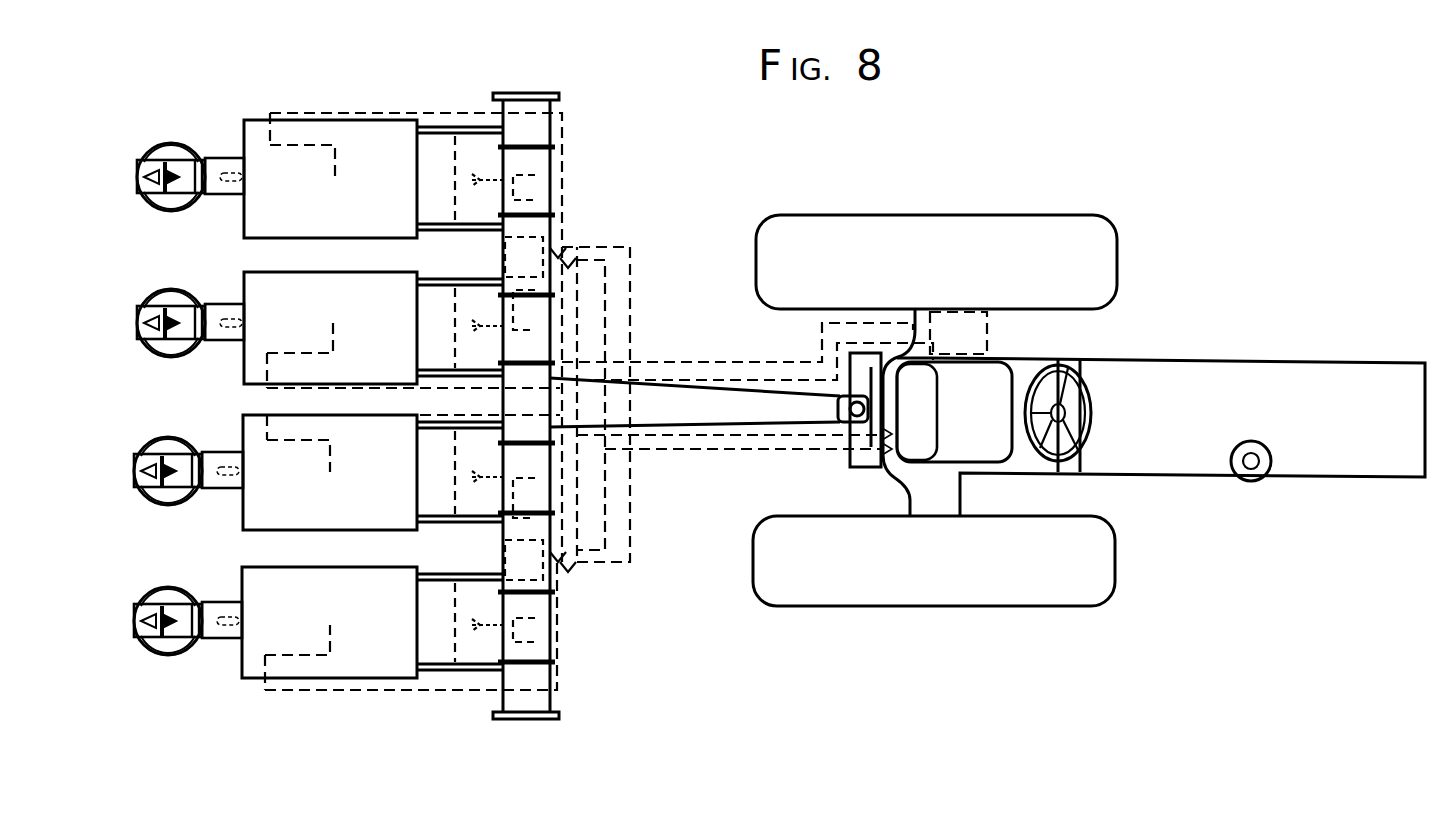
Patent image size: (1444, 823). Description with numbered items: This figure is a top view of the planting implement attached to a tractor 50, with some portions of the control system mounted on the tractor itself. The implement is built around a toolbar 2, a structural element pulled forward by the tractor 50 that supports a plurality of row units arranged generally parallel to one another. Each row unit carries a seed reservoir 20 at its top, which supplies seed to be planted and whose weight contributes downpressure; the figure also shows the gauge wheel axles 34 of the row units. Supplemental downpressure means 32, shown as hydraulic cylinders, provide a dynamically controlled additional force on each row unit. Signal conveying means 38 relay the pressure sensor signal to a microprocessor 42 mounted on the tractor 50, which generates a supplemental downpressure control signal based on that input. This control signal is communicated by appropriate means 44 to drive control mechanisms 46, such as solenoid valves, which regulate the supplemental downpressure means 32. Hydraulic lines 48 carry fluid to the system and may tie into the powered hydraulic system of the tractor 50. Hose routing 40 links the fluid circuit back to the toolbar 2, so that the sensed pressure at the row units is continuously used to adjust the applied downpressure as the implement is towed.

The toolbar 2 is at (557, 108).
The seed reservoir 20 is at (243, 134).
The supplemental downpressure means 32 is at (478, 195).
The gauge wheel axle 34 is at (330, 318).
The signal conveying means 38 is at (452, 113).
The hose loop 40 is at (530, 622).
The microprocessor 42 is at (990, 330).
The communicating means 44 is at (686, 380).
The drive control mechanism 46 is at (543, 237).
The hydraulic lines 48 is at (708, 455).
The tractor 50 is at (1230, 357).